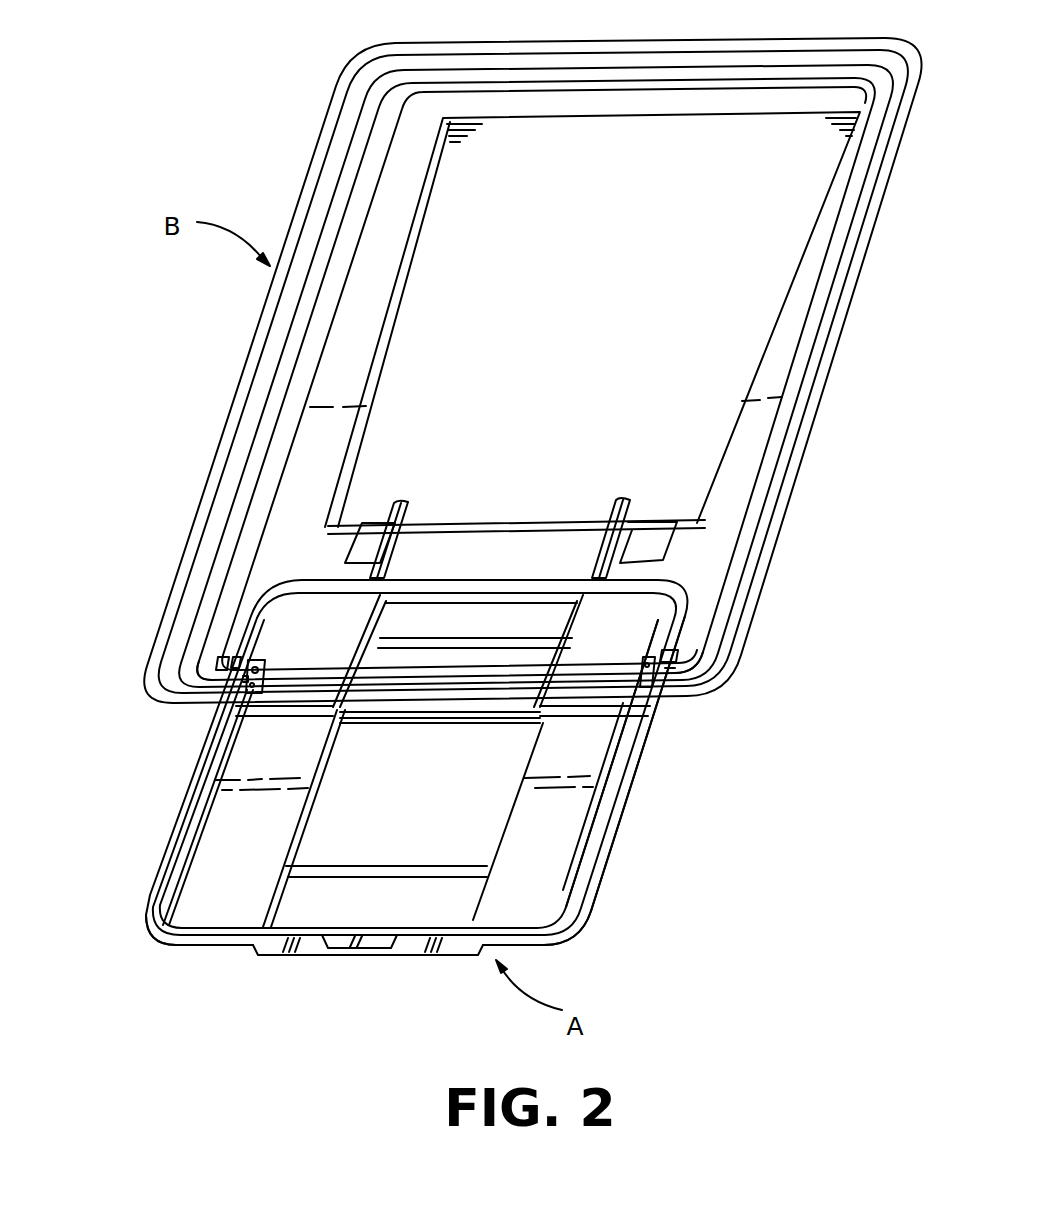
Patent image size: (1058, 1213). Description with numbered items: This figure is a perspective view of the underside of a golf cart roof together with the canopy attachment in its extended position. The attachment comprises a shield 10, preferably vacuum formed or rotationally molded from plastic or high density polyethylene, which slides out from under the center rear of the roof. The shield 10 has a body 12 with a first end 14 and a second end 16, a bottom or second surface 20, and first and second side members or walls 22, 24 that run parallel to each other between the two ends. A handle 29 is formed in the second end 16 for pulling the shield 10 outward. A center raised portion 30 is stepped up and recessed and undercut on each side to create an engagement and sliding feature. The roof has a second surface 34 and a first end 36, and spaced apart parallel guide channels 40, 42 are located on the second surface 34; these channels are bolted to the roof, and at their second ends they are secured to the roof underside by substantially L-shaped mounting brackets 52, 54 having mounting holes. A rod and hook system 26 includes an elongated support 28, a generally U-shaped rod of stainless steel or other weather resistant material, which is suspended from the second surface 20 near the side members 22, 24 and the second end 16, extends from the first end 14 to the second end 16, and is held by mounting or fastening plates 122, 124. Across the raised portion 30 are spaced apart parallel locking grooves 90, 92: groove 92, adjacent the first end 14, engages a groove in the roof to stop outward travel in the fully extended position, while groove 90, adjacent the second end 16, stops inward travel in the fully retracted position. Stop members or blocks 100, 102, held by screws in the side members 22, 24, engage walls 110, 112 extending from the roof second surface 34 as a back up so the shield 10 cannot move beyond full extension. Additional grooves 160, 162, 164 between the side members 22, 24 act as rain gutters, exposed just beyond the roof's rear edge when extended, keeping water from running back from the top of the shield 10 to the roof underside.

The shield 10 is at (563, 860).
The body 12 is at (193, 875).
The first end 14 is at (274, 625).
The second end 16 is at (270, 947).
The second or bottom surface 20 is at (238, 758).
The first side member or wall 22 is at (155, 888).
The second side member or wall 24 is at (640, 762).
The rod and hook system 26 is at (608, 803).
The elongated support 28 is at (562, 915).
The handle 29 is at (342, 947).
The center raised portion 30 is at (485, 840).
The second surface 34 is at (412, 335).
The first end 36 is at (706, 621).
The guide channel 40 is at (411, 505).
The guide channel 42 is at (614, 517).
The mounting bracket 52 is at (372, 522).
The mounting bracket 54 is at (656, 526).
The locking groove 90 is at (420, 870).
The locking groove 92 is at (464, 648).
The stop member or block 100 is at (222, 657).
The stop member or block 102 is at (662, 655).
The wall 110 is at (180, 668).
The wall 112 is at (712, 668).
The mounting or fastening plate 122 is at (265, 674).
The mounting or fastening plate 124 is at (644, 660).
The groove 160 is at (290, 717).
The groove 162 is at (407, 720).
The groove 164 is at (622, 705).